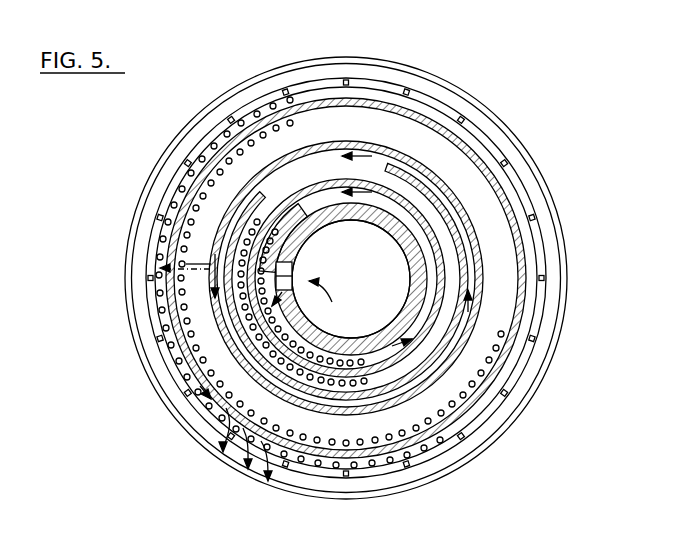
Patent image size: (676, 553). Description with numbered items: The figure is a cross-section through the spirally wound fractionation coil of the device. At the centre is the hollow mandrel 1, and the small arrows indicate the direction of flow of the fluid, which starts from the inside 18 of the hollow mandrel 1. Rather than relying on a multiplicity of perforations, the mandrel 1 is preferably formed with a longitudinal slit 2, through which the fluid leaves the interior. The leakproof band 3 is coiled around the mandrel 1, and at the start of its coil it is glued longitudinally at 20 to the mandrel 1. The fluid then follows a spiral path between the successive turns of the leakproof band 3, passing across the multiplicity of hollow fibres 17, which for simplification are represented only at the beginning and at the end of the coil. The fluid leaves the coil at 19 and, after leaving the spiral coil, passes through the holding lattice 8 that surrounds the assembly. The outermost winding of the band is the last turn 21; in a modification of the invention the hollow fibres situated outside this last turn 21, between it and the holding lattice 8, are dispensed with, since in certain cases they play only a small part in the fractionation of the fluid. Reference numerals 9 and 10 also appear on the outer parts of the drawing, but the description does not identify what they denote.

The hollow mandrel 1 is at (357, 205).
The longitudinal slit 2 is at (270, 262).
The leakproof band 3 is at (395, 148).
The lattice 8 is at (441, 96).
The inner shell 9 is at (474, 112).
The outer shell 10 is at (518, 134).
The hollow fibres 17 is at (258, 266).
The inside of the hollow mandrel 18 is at (324, 253).
The coil outlet 19 is at (200, 397).
The glued attachment of band to mandrel 20 is at (276, 226).
The last turn 21 is at (512, 196).